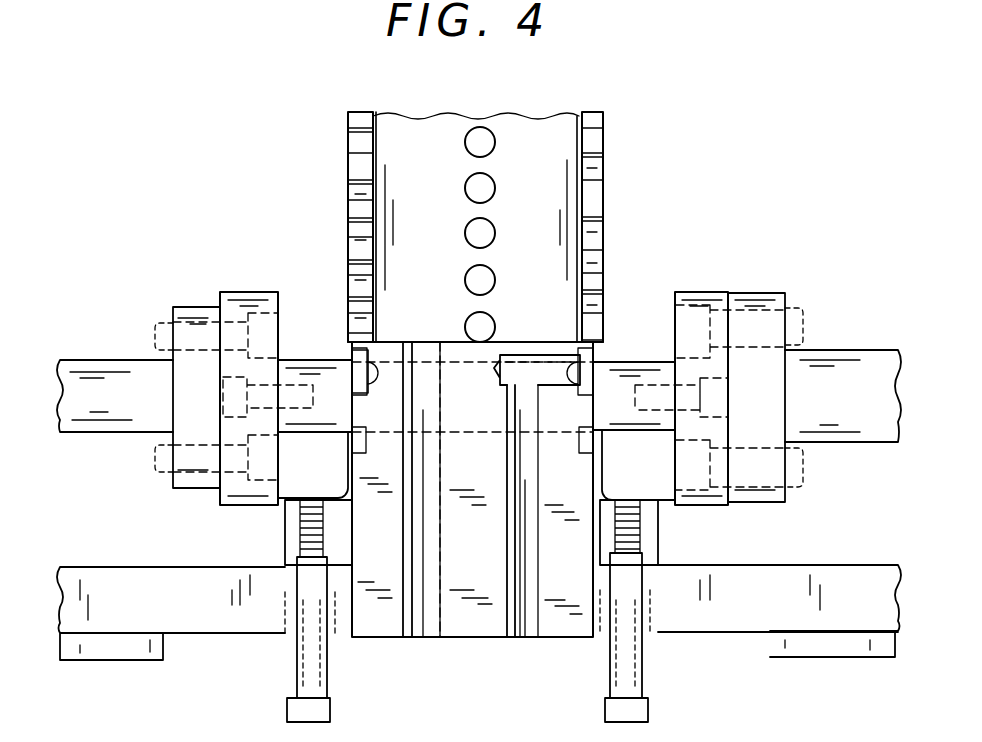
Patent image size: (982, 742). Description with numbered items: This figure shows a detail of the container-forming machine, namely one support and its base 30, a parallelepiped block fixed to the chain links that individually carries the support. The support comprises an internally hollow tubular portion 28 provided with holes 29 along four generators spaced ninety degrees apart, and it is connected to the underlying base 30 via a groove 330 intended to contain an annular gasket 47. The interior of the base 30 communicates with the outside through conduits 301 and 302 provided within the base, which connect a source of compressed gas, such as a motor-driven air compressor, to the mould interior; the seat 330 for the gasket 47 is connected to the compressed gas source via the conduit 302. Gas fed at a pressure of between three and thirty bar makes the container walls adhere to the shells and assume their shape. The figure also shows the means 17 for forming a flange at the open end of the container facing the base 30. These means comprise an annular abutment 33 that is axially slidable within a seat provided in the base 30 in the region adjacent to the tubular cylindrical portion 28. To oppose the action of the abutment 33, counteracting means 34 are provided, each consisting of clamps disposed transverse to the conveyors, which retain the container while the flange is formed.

The means for forming a flange 17 is at (248, 230).
The tubular portion 28 is at (603, 206).
The holes 29 is at (481, 128).
The base 30 is at (374, 628).
The conduit 301 is at (425, 630).
The conduit 302 is at (523, 630).
The annular abutment 33 is at (290, 540).
The counteracting means 34 is at (305, 360).
The gasket 47 is at (600, 355).
The groove 330 is at (346, 352).